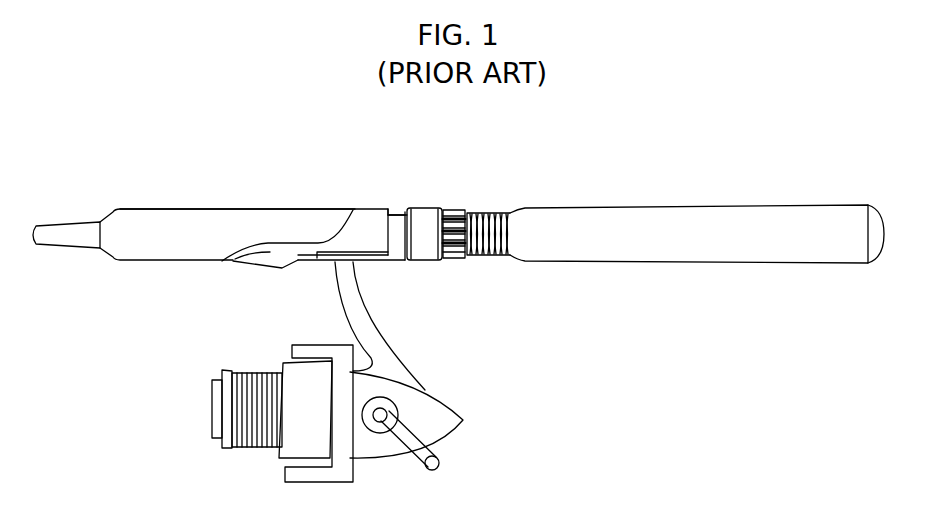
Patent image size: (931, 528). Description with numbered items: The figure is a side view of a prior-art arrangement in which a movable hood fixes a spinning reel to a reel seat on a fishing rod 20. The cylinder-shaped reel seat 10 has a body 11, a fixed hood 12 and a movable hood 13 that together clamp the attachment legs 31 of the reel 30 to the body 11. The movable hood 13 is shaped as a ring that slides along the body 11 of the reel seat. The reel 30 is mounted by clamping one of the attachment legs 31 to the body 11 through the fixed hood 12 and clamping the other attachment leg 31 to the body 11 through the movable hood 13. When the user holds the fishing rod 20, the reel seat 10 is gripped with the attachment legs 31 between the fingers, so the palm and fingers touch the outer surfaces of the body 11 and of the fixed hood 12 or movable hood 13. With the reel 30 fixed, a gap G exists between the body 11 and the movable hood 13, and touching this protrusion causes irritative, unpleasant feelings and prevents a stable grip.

The reel seat 10 is at (275, 204).
The body 11 is at (160, 215).
The fixed hood 12 is at (268, 266).
The movable hood 13 is at (427, 220).
The gap G is at (398, 220).
The fishing rod 20 is at (75, 252).
The reel 30 is at (446, 394).
The attachment legs 31 is at (355, 265).